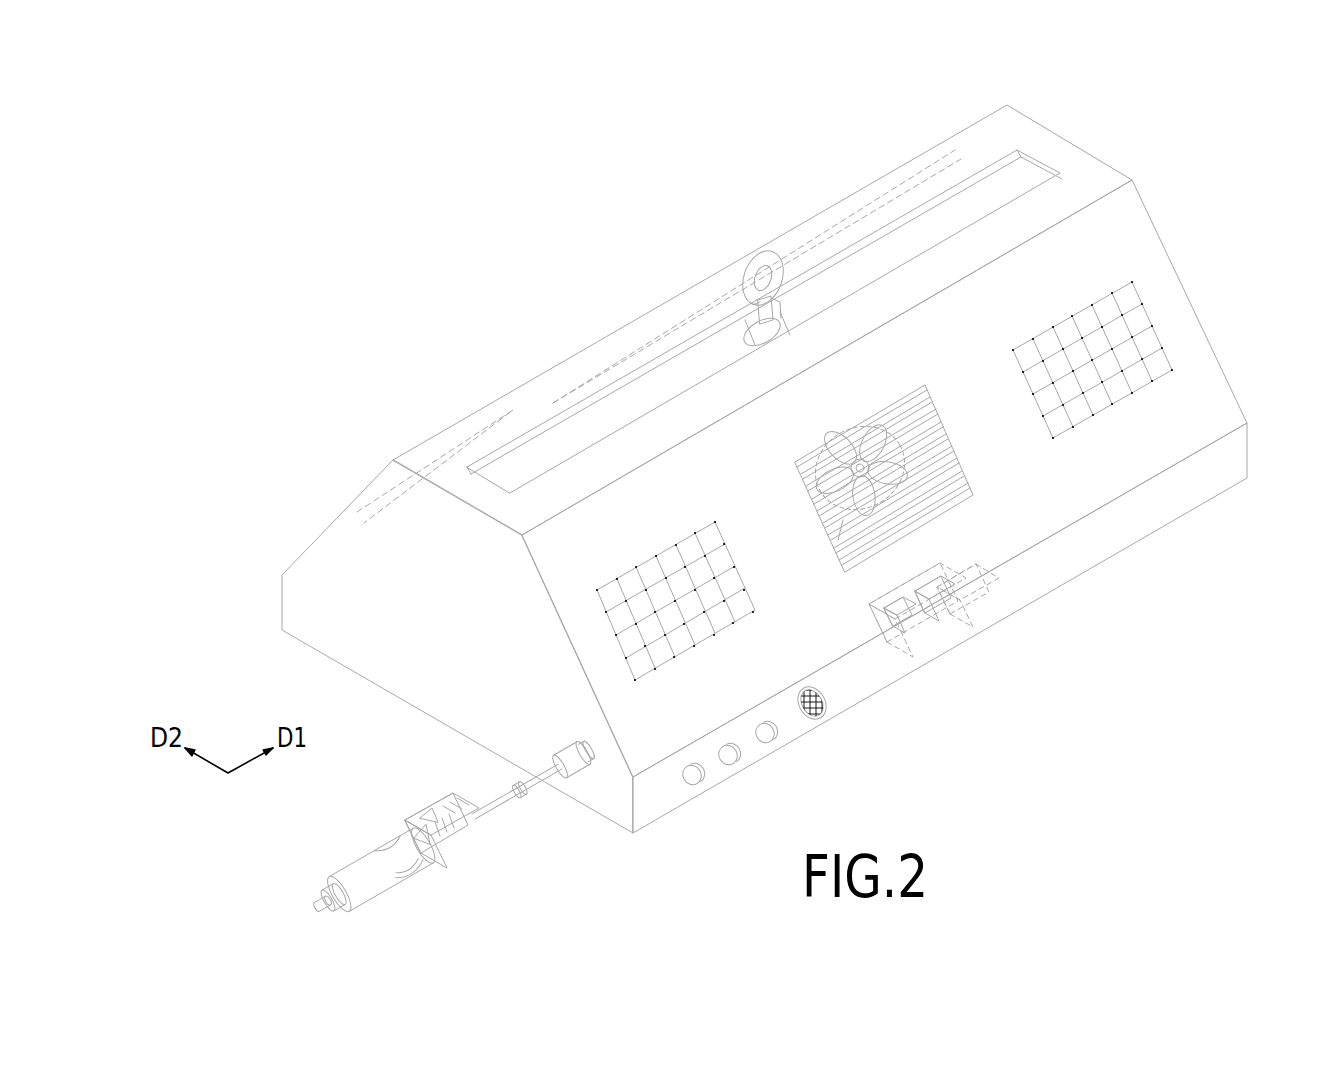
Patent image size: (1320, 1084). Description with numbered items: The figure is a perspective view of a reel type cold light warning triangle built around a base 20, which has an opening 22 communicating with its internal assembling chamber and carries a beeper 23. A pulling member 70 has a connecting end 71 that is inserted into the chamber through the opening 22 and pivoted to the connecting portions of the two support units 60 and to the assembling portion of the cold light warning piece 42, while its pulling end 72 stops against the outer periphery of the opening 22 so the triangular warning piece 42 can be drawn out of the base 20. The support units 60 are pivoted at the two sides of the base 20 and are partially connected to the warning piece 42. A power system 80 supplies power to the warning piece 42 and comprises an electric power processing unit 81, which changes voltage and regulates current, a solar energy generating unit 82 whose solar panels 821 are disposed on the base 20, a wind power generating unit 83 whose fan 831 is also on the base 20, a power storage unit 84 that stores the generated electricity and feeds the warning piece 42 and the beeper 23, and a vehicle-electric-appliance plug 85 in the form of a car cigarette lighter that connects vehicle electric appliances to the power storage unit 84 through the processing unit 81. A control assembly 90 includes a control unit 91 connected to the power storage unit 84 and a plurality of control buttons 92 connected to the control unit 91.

The base 20 is at (751, 452).
The opening 22 is at (1037, 163).
The beeper 23 is at (814, 704).
The cold light warning piece 42 is at (765, 340).
The support unit 60 is at (652, 390).
The pulling member 70 is at (734, 242).
The connecting end 71 is at (768, 318).
The pulling end 72 is at (767, 258).
The power system 80 is at (806, 493).
The electric power processing unit 81 is at (923, 618).
The solar energy generating unit 82 is at (1145, 345).
The wind power generating unit 83 is at (748, 508).
The power storage unit 84 is at (950, 603).
The vehicle-electric-appliance plug 85 is at (387, 855).
The control assembly 90 is at (992, 613).
The control unit 91 is at (985, 590).
The control buttons 92 is at (770, 735).
The solar panels 821 is at (806, 493).
The fan 831 is at (843, 520).